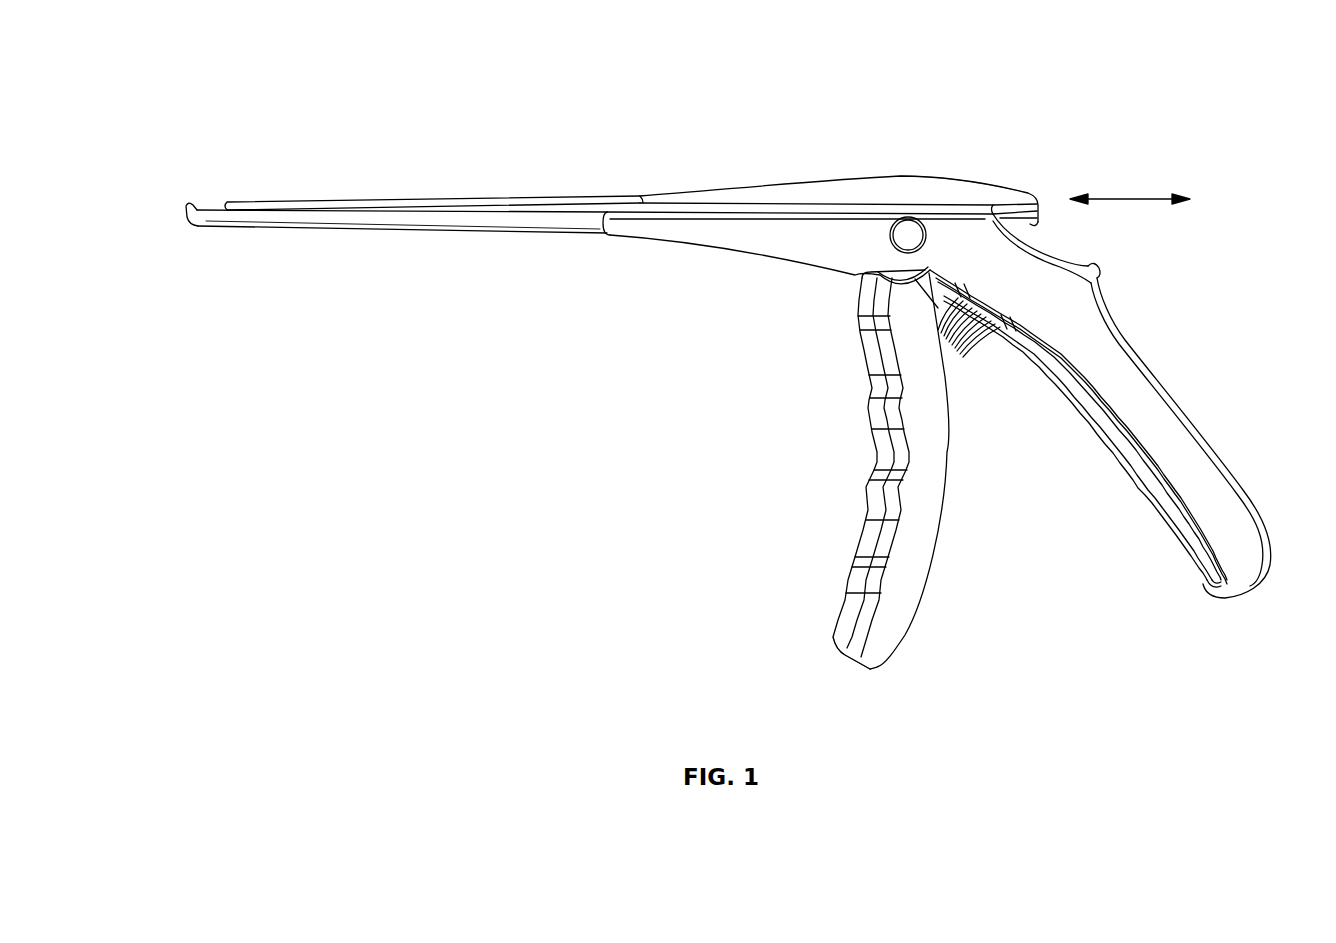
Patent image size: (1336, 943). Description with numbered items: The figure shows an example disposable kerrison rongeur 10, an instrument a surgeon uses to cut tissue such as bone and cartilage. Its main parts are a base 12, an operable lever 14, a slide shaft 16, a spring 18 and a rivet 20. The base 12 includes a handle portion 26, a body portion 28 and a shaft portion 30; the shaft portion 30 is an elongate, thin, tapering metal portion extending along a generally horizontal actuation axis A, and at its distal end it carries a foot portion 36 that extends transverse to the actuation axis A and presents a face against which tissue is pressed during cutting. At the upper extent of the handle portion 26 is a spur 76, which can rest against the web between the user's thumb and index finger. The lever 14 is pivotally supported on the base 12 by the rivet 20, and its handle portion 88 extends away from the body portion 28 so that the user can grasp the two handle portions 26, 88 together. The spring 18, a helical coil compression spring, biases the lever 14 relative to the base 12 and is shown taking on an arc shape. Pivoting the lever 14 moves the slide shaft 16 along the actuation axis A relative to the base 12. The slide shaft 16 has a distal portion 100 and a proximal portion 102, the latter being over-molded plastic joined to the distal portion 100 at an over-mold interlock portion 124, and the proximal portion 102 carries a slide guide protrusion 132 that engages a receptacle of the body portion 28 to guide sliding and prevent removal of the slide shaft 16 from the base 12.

The disposable kerrison rongeur 10 is at (278, 70).
The base 12 is at (1218, 308).
The operable lever 14 is at (872, 487).
The slide shaft 16 is at (862, 176).
The spring 18 is at (972, 342).
The rivet 20 is at (891, 238).
The handle portion 26 is at (1119, 406).
The body portion 28 is at (757, 239).
The shaft portion 30 is at (312, 241).
The foot portion 36 is at (190, 203).
The spur 76 is at (1099, 268).
The handle portion 88 is at (882, 633).
The distal portion 100 is at (311, 195).
The proximal portion 102 is at (933, 163).
The over-mold interlock portion 124 is at (695, 196).
The slide guide protrusion 132 is at (1050, 236).
The actuation axis A is at (1132, 197).